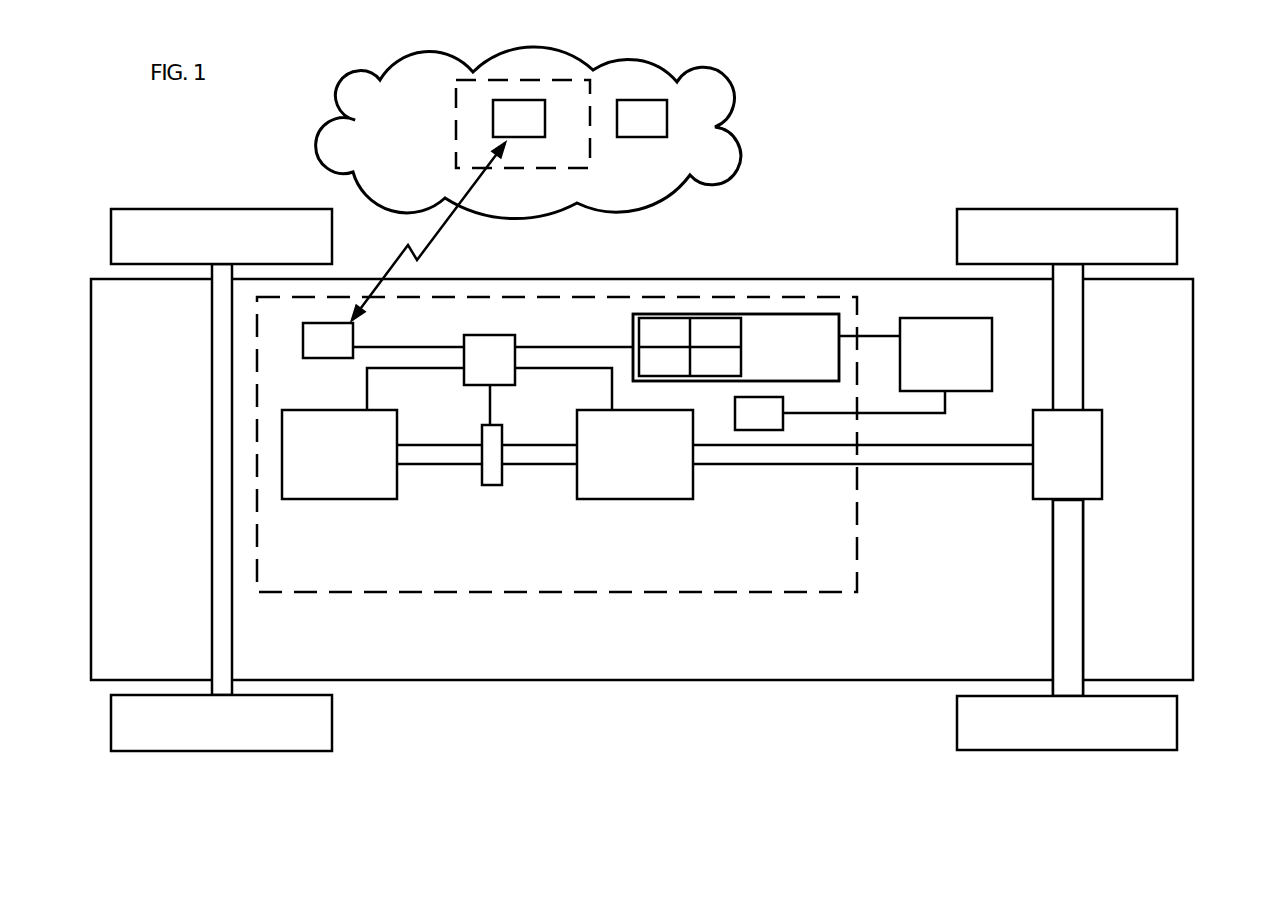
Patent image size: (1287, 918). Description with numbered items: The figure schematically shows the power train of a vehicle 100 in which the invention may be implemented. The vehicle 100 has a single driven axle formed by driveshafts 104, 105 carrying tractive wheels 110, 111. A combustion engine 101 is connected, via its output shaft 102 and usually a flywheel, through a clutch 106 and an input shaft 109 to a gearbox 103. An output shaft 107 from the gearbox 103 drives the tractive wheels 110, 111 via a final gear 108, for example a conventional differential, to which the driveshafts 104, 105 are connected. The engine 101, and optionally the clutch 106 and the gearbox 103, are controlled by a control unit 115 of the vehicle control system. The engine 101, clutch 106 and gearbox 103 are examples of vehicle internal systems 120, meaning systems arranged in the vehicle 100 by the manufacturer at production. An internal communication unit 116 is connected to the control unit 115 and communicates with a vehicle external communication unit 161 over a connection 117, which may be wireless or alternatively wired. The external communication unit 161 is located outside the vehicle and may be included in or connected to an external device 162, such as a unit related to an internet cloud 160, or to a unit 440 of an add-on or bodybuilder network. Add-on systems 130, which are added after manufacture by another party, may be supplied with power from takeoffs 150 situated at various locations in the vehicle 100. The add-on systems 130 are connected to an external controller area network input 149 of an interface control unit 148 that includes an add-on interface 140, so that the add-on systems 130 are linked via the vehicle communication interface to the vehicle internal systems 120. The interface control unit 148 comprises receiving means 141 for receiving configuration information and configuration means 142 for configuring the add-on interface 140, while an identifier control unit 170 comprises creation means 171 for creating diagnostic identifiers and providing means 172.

The vehicle 100 is at (1108, 102).
The combustion engine 101 is at (310, 487).
The output shaft 102 is at (432, 453).
The gearbox 103 is at (648, 480).
The driveshaft 104 is at (1073, 335).
The driveshaft 105 is at (1077, 605).
The clutch 106 is at (487, 473).
The output shaft 107 is at (957, 467).
The final gear 108 is at (1100, 450).
The input shaft 109 is at (531, 455).
The tractive wheel 110 is at (1173, 726).
The tractive wheel 111 is at (1177, 229).
The control unit 115 is at (489, 380).
The internal communication unit 116 is at (468, 340).
The wireless connection 117 is at (428, 231).
The vehicle internal systems 120 is at (557, 444).
The add-on systems 130 is at (946, 354).
The add-on interface 140 is at (736, 347).
The receiving means 141 is at (663, 334).
The configuration means 142 is at (714, 334).
The interface control unit 148 is at (797, 313).
The external controller area network input 149 is at (842, 337).
The takeoff 150 is at (840, 410).
The internet cloud 160 is at (528, 133).
The vehicle external communication unit 161 is at (519, 118).
The external device 162 is at (523, 124).
The identifier control unit 170 is at (726, 347).
The creation means 171 is at (663, 362).
The providing means 172 is at (714, 362).
The unit of add-on/bodybuilder network 440 is at (642, 118).